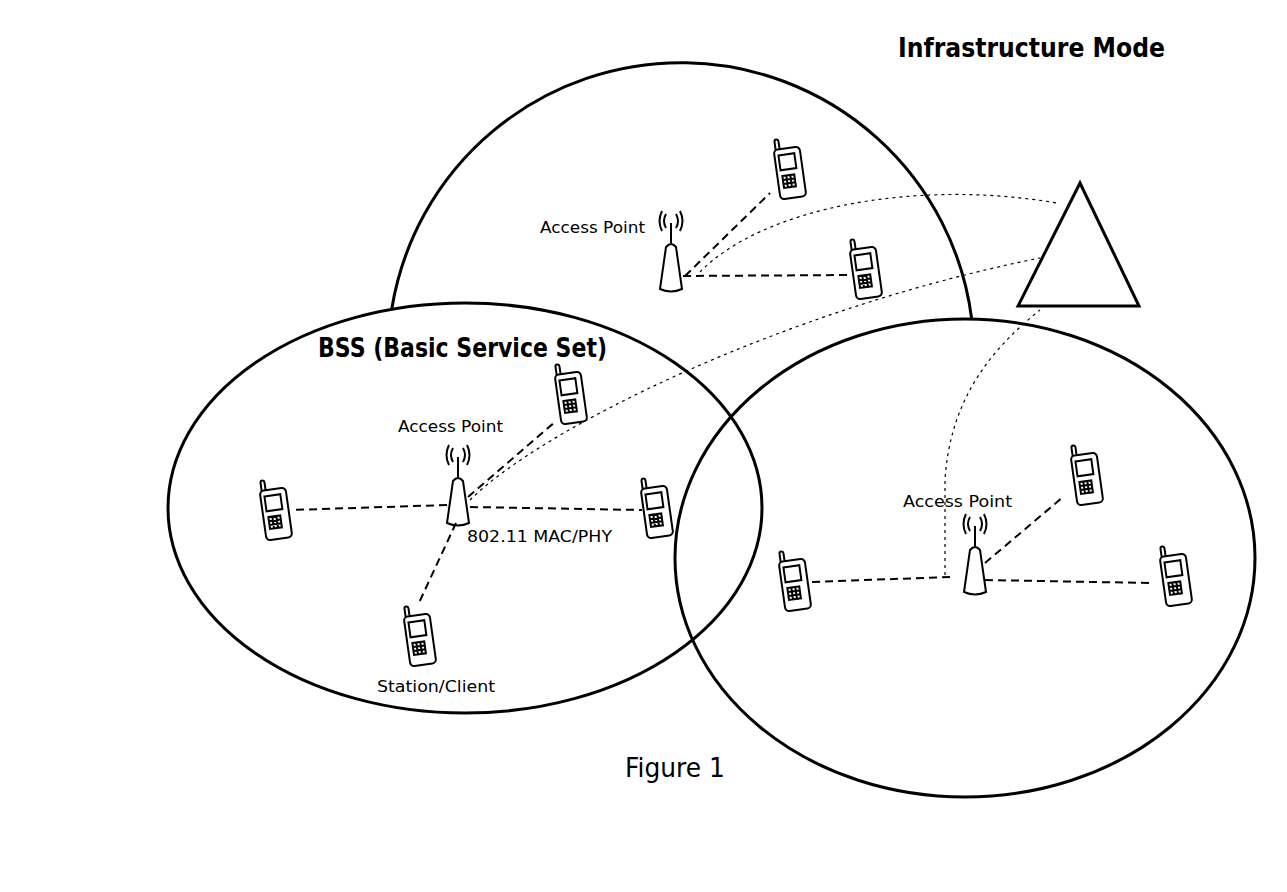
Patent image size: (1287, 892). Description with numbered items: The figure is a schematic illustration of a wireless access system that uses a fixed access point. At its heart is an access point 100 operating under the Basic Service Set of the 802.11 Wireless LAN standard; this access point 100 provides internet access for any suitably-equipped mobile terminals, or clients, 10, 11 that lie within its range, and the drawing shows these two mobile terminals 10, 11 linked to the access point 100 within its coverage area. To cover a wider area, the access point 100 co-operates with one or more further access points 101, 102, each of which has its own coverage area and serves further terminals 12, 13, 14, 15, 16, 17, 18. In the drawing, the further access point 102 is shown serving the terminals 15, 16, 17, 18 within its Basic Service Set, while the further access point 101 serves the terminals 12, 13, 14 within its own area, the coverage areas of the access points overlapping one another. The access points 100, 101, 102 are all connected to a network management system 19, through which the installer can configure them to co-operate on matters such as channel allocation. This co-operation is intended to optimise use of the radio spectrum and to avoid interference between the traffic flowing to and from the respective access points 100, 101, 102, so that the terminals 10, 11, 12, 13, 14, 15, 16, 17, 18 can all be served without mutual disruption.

The mobile terminal 10 is at (768, 168).
The mobile terminal 11 is at (875, 256).
The terminal 12 is at (1070, 452).
The terminal 13 is at (1175, 596).
The terminal 14 is at (793, 601).
The terminal 15 is at (543, 393).
The terminal 16 is at (650, 518).
The terminal 17 is at (436, 635).
The terminal 18 is at (285, 503).
The network management system 19 is at (1078, 244).
The access point 100 is at (636, 251).
The further access point 101 is at (970, 575).
The further access point 102 is at (429, 497).